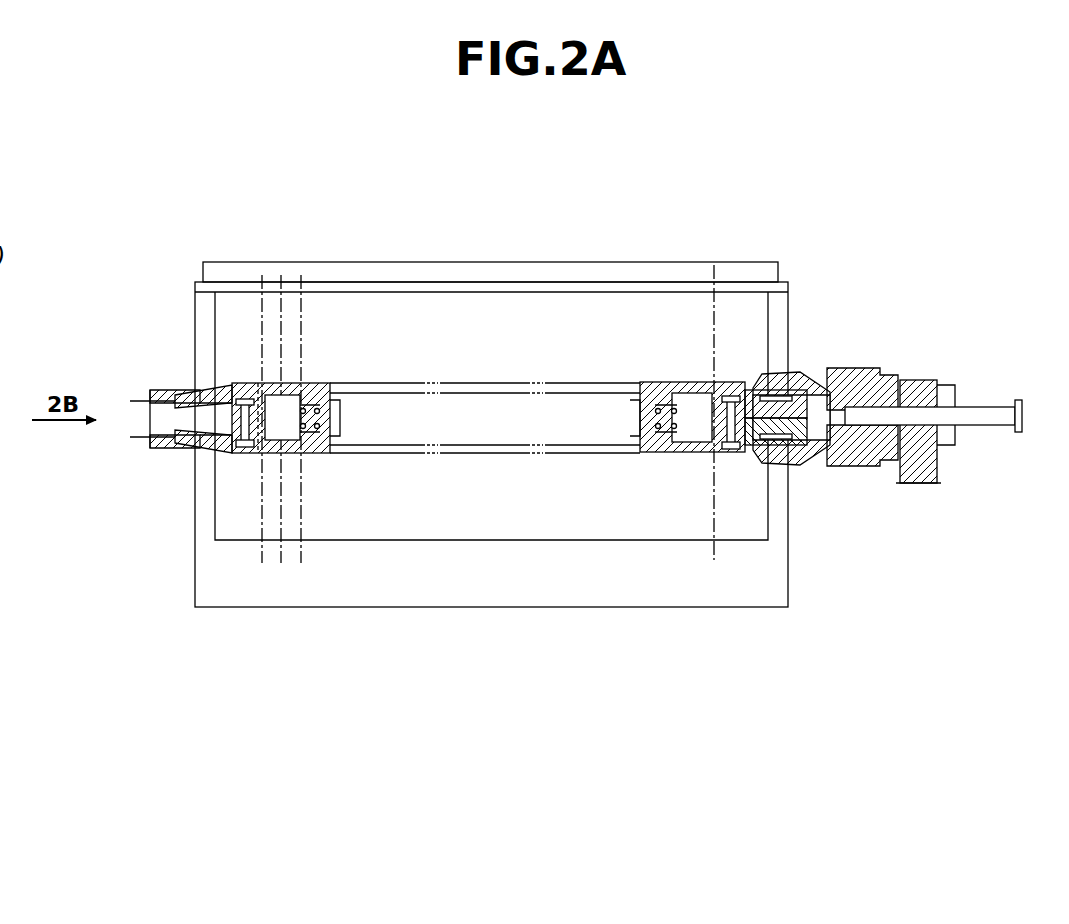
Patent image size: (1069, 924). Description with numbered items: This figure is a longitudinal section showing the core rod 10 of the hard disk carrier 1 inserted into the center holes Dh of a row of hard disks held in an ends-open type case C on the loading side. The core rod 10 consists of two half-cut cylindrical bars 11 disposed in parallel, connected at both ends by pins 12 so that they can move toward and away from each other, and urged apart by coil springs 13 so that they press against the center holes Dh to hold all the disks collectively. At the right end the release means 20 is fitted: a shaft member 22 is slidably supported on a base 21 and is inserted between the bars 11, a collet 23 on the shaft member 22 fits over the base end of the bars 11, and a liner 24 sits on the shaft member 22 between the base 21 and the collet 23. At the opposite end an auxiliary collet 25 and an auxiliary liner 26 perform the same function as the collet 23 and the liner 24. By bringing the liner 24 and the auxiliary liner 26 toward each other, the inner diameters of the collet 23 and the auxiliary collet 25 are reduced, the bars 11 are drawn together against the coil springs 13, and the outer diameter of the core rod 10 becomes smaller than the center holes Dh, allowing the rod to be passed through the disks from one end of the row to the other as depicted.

The hard disk carrier 1 is at (855, 225).
The ends-open type case C is at (658, 262).
The core rod 10 is at (487, 374).
The bar 11 is at (340, 388).
The pin 12 is at (245, 450).
The coil spring 13 is at (322, 428).
The center hole Dh is at (260, 372).
The release means 20 is at (933, 362).
The base 21 is at (922, 485).
The shaft member 22 is at (1005, 405).
The collet 23 is at (802, 375).
The liner 24 is at (885, 370).
The auxiliary collet 25 is at (190, 442).
The auxiliary liner 26 is at (157, 395).